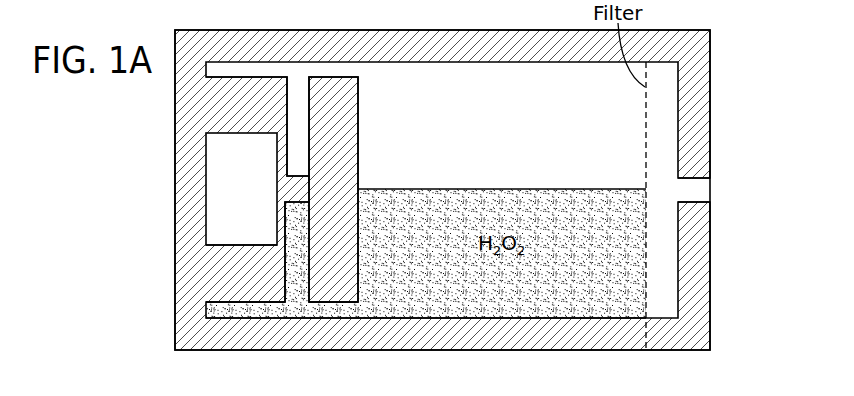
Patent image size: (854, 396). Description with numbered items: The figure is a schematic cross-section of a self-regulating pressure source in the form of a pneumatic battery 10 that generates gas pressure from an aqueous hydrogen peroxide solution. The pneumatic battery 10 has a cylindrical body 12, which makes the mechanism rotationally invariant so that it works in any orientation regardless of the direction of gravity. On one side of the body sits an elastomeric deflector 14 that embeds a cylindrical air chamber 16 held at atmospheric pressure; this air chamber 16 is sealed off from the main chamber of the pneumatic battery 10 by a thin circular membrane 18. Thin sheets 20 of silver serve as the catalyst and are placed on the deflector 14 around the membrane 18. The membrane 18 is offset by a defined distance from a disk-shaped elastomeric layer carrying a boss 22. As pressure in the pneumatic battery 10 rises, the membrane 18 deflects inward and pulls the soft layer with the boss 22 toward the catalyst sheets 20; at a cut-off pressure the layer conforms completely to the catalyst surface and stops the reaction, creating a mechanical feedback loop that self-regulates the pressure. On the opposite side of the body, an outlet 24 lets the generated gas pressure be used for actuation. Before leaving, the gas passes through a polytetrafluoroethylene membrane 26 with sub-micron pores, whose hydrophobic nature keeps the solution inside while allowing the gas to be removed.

The pneumatic battery 10 is at (146, 168).
The cylindrical body 12 is at (177, 260).
The elastomeric deflector 14 is at (282, 130).
The cylindrical air chamber 16 is at (255, 200).
The thin circular membrane 18 is at (268, 228).
The thin sheets of silver 20 is at (237, 289).
The boss 22 is at (360, 134).
The outlet 24 is at (712, 176).
The polytetrafluoroethylene membrane 26 is at (643, 224).